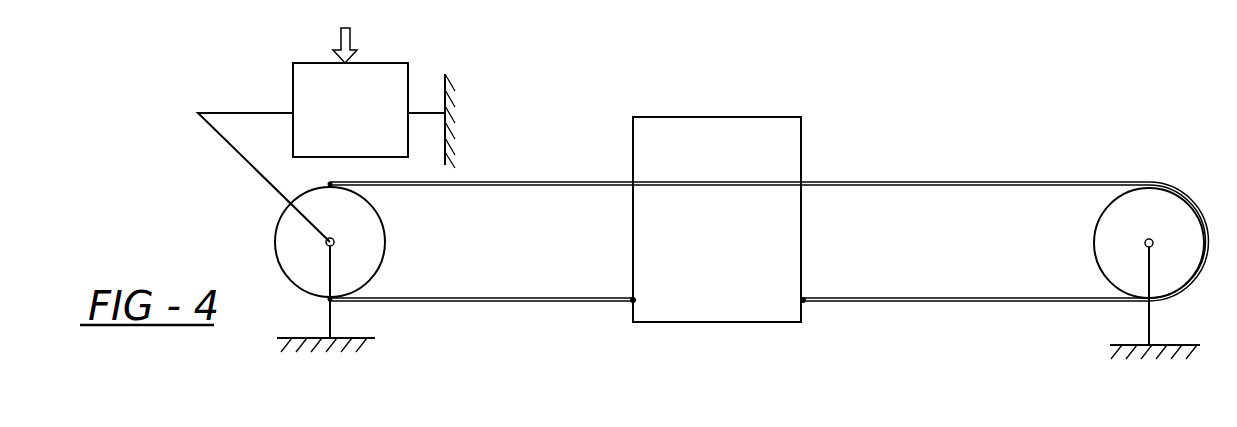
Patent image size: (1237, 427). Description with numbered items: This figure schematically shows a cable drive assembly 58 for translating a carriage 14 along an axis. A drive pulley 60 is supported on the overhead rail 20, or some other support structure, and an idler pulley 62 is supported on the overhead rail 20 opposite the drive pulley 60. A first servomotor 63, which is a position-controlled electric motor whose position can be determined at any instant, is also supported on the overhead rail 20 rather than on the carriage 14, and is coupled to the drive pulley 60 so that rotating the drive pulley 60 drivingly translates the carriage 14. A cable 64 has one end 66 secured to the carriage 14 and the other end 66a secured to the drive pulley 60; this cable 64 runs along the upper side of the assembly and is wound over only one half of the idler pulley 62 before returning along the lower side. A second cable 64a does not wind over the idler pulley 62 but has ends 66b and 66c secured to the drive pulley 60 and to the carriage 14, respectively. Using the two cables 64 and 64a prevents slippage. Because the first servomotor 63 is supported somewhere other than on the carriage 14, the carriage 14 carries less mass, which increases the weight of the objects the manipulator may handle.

The carriage 14 is at (748, 117).
The overhead rail 20 is at (446, 80).
The cable drive assembly 58 is at (985, 163).
The drive pulley 60 is at (385, 250).
The idler pulley 62 is at (1095, 258).
The first servomotor 63 is at (408, 75).
The cable 64 is at (508, 181).
The second cable 64a is at (500, 297).
The end of cable 66 is at (803, 302).
The other end of cable 66a is at (330, 184).
The end of second cable 66b is at (330, 299).
The end of second cable 66c is at (633, 301).